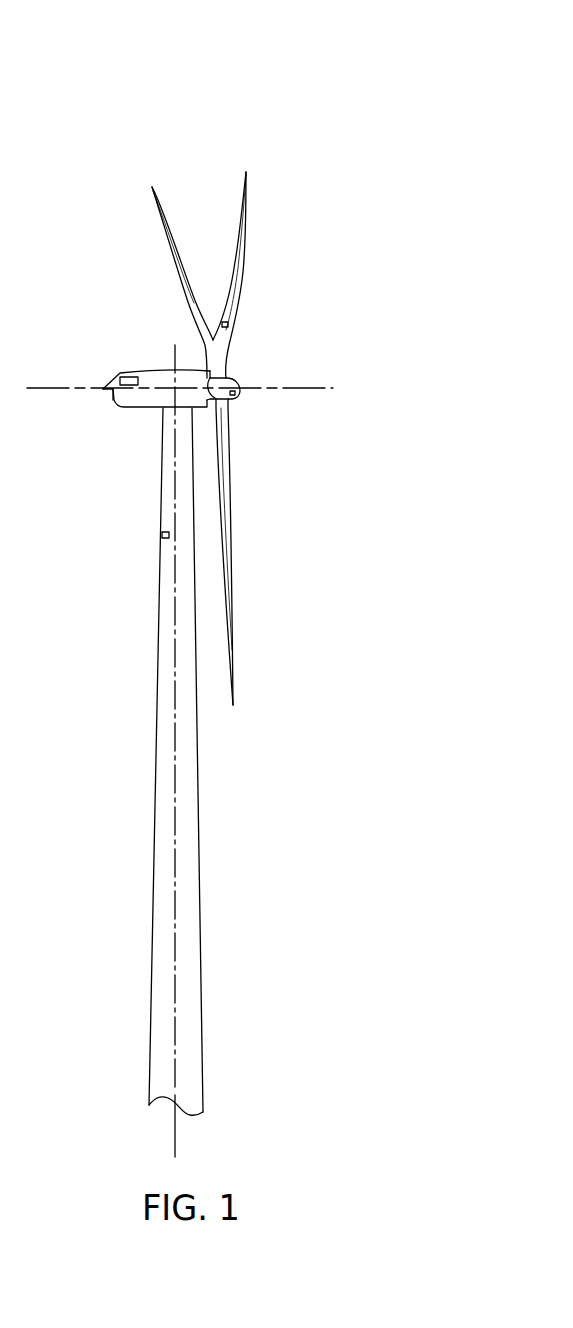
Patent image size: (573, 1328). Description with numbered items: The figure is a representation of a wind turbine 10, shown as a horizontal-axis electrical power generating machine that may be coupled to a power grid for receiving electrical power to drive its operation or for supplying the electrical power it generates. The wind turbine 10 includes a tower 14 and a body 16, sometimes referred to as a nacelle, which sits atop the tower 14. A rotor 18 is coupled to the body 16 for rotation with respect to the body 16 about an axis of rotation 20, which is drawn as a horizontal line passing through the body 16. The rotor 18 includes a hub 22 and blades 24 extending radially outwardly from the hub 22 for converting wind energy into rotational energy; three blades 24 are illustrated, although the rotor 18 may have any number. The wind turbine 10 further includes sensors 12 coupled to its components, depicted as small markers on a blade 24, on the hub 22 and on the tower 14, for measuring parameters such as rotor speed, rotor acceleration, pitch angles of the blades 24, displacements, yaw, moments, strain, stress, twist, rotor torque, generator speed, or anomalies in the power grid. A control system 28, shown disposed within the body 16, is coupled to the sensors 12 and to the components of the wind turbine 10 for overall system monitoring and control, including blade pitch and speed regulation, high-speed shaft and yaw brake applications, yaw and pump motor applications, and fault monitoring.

The wind turbine 10 is at (399, 71).
The sensors 12 is at (225, 322).
The tower 14 is at (154, 862).
The body 16 is at (124, 405).
The rotor 18 is at (246, 429).
The axis of rotation 20 is at (305, 390).
The hub 22 is at (241, 380).
The blades 24 is at (165, 240).
The control system 28 is at (130, 377).